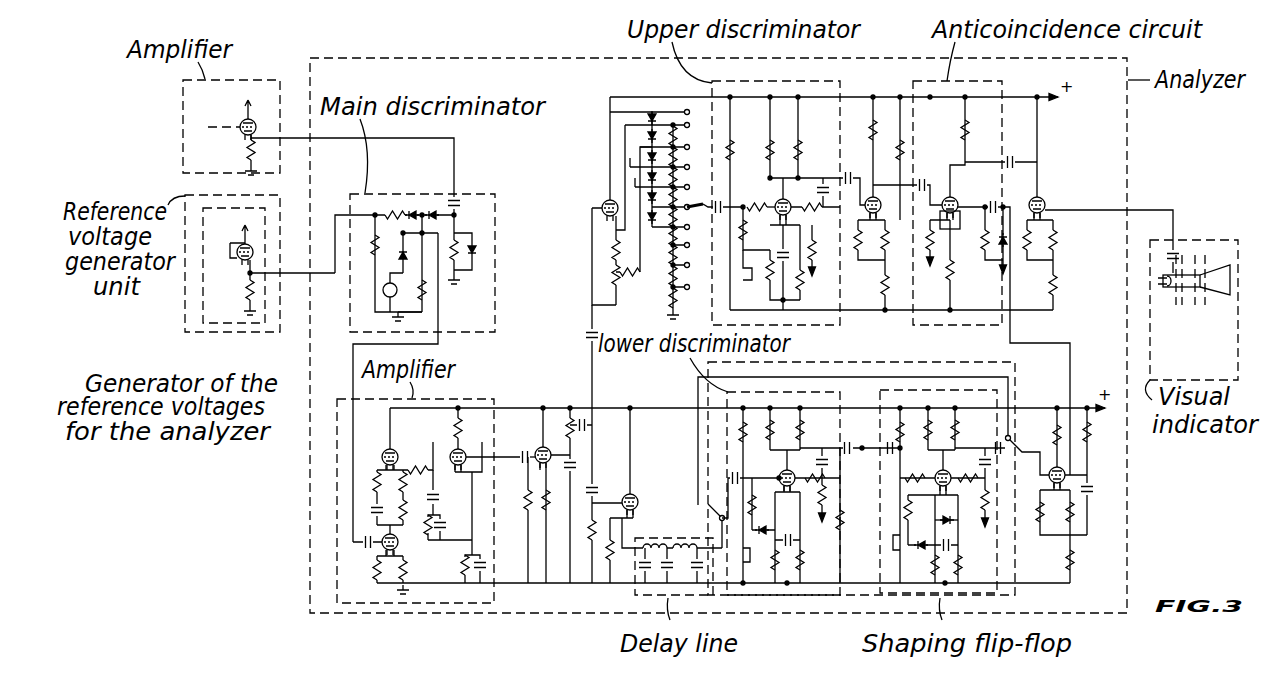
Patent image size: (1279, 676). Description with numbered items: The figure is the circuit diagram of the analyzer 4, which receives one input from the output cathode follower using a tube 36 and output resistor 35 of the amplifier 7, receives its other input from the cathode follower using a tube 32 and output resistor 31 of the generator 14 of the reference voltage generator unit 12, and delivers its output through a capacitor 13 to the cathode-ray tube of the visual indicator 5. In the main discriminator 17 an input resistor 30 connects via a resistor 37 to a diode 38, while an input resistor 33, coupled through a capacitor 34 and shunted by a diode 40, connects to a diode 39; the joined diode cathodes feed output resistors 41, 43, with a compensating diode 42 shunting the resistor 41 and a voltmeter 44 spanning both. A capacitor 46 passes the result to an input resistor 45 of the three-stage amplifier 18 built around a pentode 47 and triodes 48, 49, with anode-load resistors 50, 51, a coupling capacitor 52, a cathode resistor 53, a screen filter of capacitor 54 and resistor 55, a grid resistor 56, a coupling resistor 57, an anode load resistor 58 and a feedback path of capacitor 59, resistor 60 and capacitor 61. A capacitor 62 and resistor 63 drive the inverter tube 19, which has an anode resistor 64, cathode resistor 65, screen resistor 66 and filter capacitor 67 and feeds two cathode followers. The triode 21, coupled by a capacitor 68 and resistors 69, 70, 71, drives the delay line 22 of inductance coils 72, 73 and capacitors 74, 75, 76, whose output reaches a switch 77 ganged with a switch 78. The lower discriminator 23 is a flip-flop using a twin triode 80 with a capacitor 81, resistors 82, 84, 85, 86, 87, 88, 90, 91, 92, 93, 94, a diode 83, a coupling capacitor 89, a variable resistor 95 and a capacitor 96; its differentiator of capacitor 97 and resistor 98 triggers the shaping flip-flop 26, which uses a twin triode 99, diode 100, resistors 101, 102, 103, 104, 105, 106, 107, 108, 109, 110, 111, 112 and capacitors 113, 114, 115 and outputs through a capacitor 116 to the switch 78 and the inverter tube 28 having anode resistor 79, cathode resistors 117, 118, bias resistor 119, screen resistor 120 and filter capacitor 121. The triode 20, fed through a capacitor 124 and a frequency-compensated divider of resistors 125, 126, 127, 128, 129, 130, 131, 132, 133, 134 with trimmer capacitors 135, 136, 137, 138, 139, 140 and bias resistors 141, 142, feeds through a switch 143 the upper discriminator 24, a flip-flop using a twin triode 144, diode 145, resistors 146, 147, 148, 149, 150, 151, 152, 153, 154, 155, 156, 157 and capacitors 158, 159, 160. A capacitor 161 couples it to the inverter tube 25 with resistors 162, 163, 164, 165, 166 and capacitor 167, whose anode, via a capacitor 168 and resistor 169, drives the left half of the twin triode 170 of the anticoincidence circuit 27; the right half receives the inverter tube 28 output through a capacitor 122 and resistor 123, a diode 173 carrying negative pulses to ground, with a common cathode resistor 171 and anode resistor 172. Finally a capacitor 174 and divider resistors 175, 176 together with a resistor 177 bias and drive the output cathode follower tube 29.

The analyzer 4 is at (1130, 132).
The visual indicator 5 is at (1192, 240).
The amplifier 7 is at (249, 78).
The reference voltage generator unit 12 is at (236, 330).
The capacitor 13 is at (1170, 250).
The generator 14 is at (262, 326).
The main discriminator 17 is at (498, 232).
The amplifier 18 is at (478, 397).
The tube 19 is at (543, 439).
The tube 20 is at (600, 214).
The tube 21 is at (1215, 262).
The delay line 22 is at (665, 535).
The lower discriminator 23 is at (790, 390).
The upper discriminator 24 is at (843, 84).
The tube 25 is at (863, 207).
The shaping flip-flop 26 is at (928, 391).
The anticoincidence circuit 27 is at (1002, 84).
The tube 28 is at (1049, 475).
The tube 29 is at (1043, 198).
The input resistor 30 is at (374, 250).
The output resistor 31 is at (246, 292).
The tube 32 is at (242, 247).
The input resistor 33 is at (460, 240).
The capacitor 34 is at (457, 197).
The output resistor 35 is at (246, 152).
The tube 36 is at (241, 120).
The resistor 37 is at (394, 210).
The diode 38 is at (412, 208).
The diode 39 is at (432, 208).
The diode 40 is at (474, 262).
The resistor 41 is at (458, 293).
The compensating diode 42 is at (398, 262).
The grounded resistor 43 is at (412, 272).
The voltmeter 44 is at (383, 292).
The input resistor 45 is at (375, 575).
The capacitor 46 is at (365, 545).
The pentode 47 is at (381, 540).
The triode 48 is at (384, 450).
The triode 49 is at (462, 448).
The resistor 50 is at (414, 478).
The resistor 51 is at (395, 507).
The capacitor 52 is at (375, 505).
The resistor 53 is at (406, 571).
The capacitor 54 is at (484, 568).
The resistor 55 is at (451, 569).
The resistor 56 is at (376, 478).
The resistor 57 is at (418, 458).
The resistor 58 is at (450, 430).
The capacitor 59 is at (434, 496).
The resistor 60 is at (432, 520).
The capacitor 61 is at (436, 527).
The capacitor 62 is at (524, 450).
The resistor 63 is at (526, 494).
The resistor 64 is at (569, 430).
The resistor 65 is at (550, 526).
The resistor 66 is at (589, 425).
The capacitor 67 is at (578, 462).
The capacitor 68 is at (594, 486).
The resistor 69 is at (589, 528).
The resistor 70 is at (607, 563).
The bias resistor 71 is at (620, 545).
The inductance coil 72 is at (660, 540).
The inductance coil 73 is at (688, 540).
The capacitor 74 is at (640, 570).
The capacitor 75 is at (665, 565).
The capacitor 76 is at (691, 565).
The switch 77 is at (728, 513).
The switch 78 is at (1053, 433).
The resistor 79 is at (1057, 407).
The twin triode 80 is at (779, 470).
The capacitor 81 is at (732, 472).
The resistor 82 is at (761, 504).
The diode 83 is at (763, 538).
The resistor 84 is at (770, 590).
The decoupling resistor 85 is at (765, 477).
The resistor 86 is at (783, 429).
The resistor 87 is at (755, 496).
The resistor 88 is at (757, 563).
The capacitor 89 is at (850, 445).
The resistor 90 is at (845, 516).
The decoupling resistor 91 is at (817, 489).
The resistor 92 is at (830, 462).
The resistor 93 is at (803, 445).
The resistor 94 is at (805, 563).
The variable resistor 95 is at (795, 536).
The capacitor 96 is at (787, 537).
The capacitor 97 is at (871, 441).
The resistor 98 is at (830, 492).
The twin triode 99 is at (938, 490).
The diode 100 is at (924, 538).
The resistor 101 is at (916, 495).
The resistor 102 is at (900, 534).
The resistor 103 is at (918, 466).
The resistor 104 is at (900, 520).
The resistor 105 is at (943, 429).
The resistor 106 is at (962, 439).
The resistor 107 is at (973, 488).
The resistor 108 is at (955, 521).
The resistor 109 is at (922, 539).
The resistor 110 is at (975, 539).
The resistor 111 is at (990, 464).
The resistor 112 is at (990, 496).
The capacitor 113 is at (898, 459).
The capacitor 114 is at (995, 442).
The capacitor 115 is at (965, 542).
The capacitor 116 is at (1010, 448).
The resistor 117 is at (1075, 508).
The resistor 118 is at (1075, 556).
The resistor 119 is at (1037, 515).
The resistor 120 is at (1089, 436).
The filter capacitor 121 is at (1090, 486).
The capacitor 122 is at (1014, 331).
The resistor 123 is at (952, 270).
The capacitor 124 is at (586, 336).
The resistor 125 is at (634, 219).
The resistor 126 is at (695, 134).
The resistor 127 is at (695, 154).
The resistor 128 is at (695, 174).
The resistor 129 is at (695, 194).
The resistor 130 is at (704, 215).
The resistor 131 is at (695, 227).
The resistor 132 is at (658, 247).
The resistor 133 is at (658, 268).
The resistor 134 is at (659, 309).
The trimmer capacitor 135 is at (625, 110).
The trimmer capacitor 136 is at (636, 125).
The trimmer capacitor 137 is at (640, 147).
The trimmer capacitor 138 is at (640, 167).
The trimmer capacitor 139 is at (640, 187).
The trimmer capacitor 140 is at (652, 225).
The resistor 141 is at (611, 248).
The resistor 142 is at (611, 272).
The switch 143 is at (722, 200).
The twin triode 144 is at (785, 191).
The diode 145 is at (759, 265).
The resistor 146 is at (734, 155).
The resistor 147 is at (722, 250).
The resistor 148 is at (760, 228).
The resistor 149 is at (756, 199).
The resistor 150 is at (768, 150).
The resistor 151 is at (800, 148).
The resistor 152 is at (770, 300).
The resistor 153 is at (769, 275).
The resistor 154 is at (816, 265).
The resistor 155 is at (824, 180).
The resistor 156 is at (905, 184).
The resistor 157 is at (806, 257).
The capacitor 158 is at (695, 276).
The capacitor 159 is at (820, 259).
The capacitor 160 is at (815, 218).
The capacitor 161 is at (850, 170).
The resistor 162 is at (871, 240).
The resistor 163 is at (871, 130).
The resistor 164 is at (870, 277).
The resistor 165 is at (884, 290).
The resistor 166 is at (893, 158).
The capacitor 167 is at (900, 240).
The capacitor 168 is at (952, 190).
The resistor 169 is at (934, 261).
The twin triode 170 is at (958, 198).
The resistor 171 is at (967, 298).
The resistor 172 is at (967, 145).
The diode 173 is at (1006, 255).
The capacitor 174 is at (1010, 158).
The resistor 175 is at (1055, 230).
The resistor 176 is at (1057, 278).
The resistor 177 is at (1057, 246).